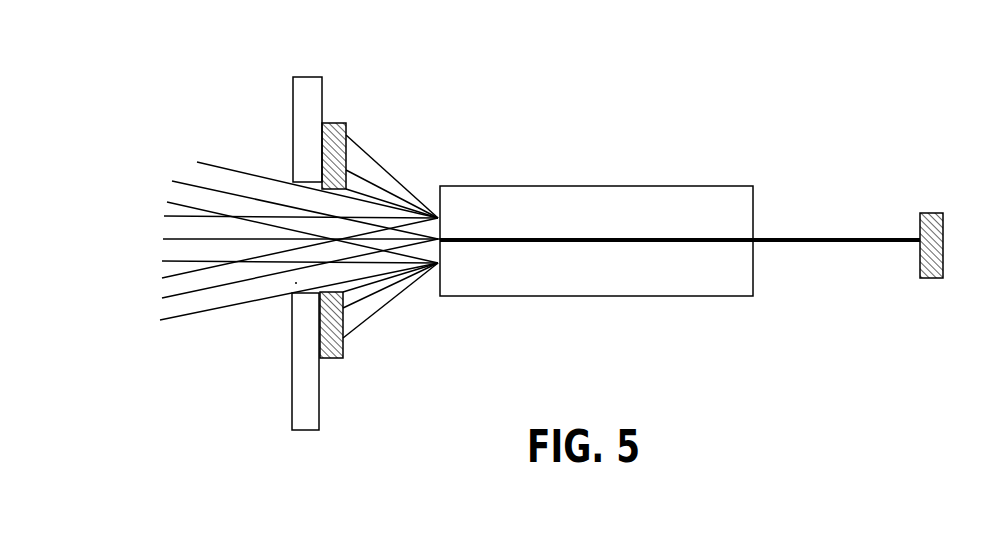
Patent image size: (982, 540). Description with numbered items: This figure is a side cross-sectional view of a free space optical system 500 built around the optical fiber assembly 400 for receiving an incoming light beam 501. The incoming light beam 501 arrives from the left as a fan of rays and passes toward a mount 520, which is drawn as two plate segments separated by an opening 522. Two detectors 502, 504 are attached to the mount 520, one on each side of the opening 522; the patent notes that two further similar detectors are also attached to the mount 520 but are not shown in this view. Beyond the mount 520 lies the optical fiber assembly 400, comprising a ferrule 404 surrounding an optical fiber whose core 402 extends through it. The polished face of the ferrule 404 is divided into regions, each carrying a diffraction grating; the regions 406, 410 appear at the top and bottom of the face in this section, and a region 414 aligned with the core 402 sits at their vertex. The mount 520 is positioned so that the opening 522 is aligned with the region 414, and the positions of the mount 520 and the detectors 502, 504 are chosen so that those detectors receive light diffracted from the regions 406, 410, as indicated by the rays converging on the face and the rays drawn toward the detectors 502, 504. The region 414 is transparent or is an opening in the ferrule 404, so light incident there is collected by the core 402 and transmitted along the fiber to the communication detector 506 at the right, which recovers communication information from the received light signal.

The free space optical system 500 is at (830, 52).
The incoming light beam 501 is at (128, 150).
The mount 520 is at (316, 77).
The detector 502 is at (343, 122).
The detector 504 is at (335, 359).
The opening 522 is at (288, 302).
The optical fiber assembly 400 is at (541, 216).
The ferrule 404 is at (667, 297).
The core 402 is at (540, 245).
The region 406 is at (440, 200).
The region 410 is at (436, 291).
The region 414 is at (329, 218).
The communication detector 506 is at (932, 279).